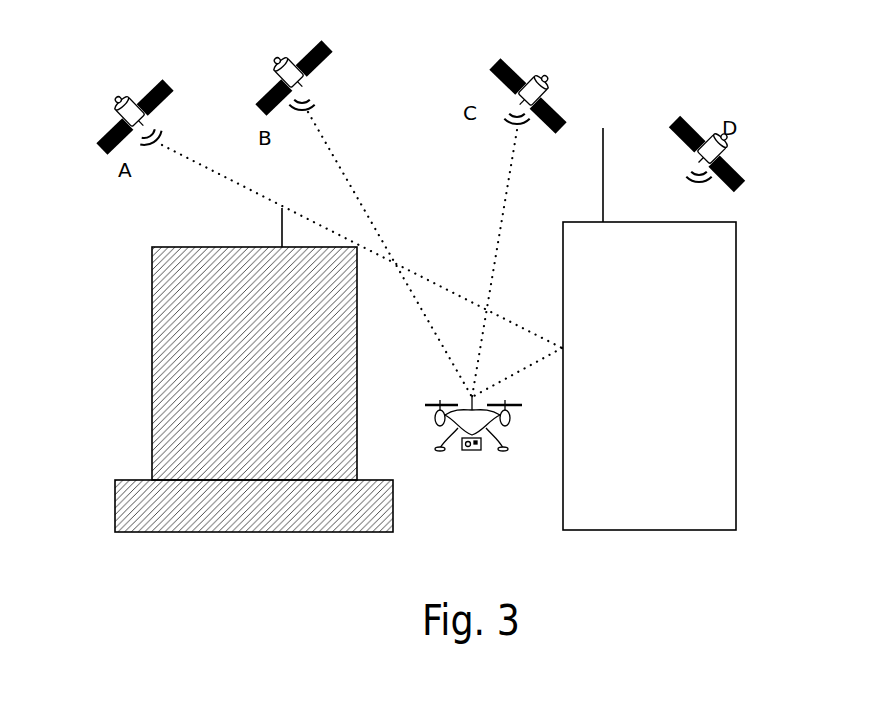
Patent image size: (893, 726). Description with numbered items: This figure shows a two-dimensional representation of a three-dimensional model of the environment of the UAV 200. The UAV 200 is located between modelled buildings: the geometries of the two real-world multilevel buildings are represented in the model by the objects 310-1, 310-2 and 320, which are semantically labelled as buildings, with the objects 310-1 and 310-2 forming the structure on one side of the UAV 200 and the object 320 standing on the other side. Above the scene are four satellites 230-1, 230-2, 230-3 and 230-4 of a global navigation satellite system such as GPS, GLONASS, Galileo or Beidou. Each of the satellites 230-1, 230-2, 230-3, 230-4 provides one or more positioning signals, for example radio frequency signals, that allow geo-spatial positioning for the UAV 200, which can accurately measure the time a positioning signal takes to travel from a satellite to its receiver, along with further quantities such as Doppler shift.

The satellite 230-1 is at (168, 87).
The satellite 230-2 is at (328, 48).
The satellite 230-3 is at (545, 100).
The satellite 230-4 is at (727, 158).
The object 310-1 is at (152, 333).
The object 310-2 is at (115, 500).
The object 320 is at (736, 350).
The UAV 200 is at (472, 452).